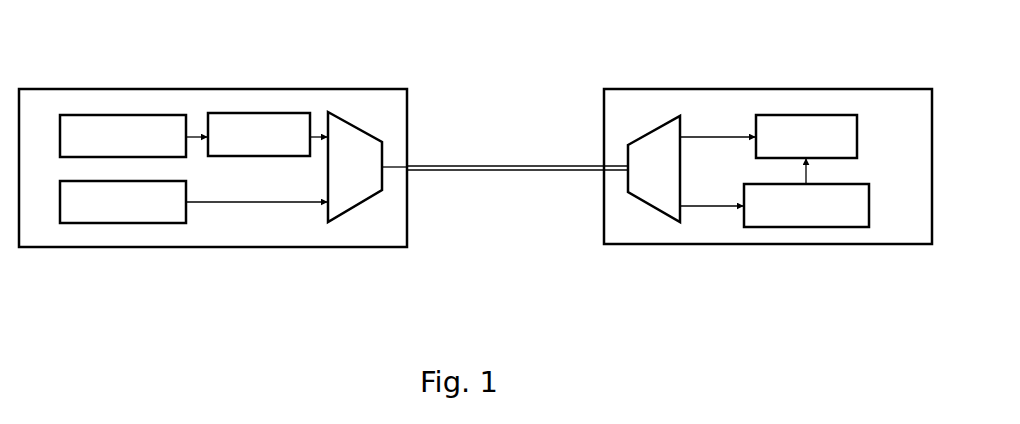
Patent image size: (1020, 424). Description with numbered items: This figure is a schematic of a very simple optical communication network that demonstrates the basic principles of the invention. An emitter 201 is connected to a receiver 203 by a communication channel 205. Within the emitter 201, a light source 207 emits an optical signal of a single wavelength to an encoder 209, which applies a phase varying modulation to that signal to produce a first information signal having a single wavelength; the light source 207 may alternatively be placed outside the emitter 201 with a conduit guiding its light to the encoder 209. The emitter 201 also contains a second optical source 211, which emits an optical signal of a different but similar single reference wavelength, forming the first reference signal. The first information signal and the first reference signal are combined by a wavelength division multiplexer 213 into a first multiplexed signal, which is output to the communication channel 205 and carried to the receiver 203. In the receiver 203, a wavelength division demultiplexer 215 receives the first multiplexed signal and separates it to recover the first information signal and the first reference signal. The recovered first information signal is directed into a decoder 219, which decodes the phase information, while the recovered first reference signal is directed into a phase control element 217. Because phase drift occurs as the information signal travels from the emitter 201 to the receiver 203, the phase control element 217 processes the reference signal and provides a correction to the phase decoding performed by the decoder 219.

The emitter 201 is at (85, 87).
The receiver 203 is at (731, 87).
The communication channel 205 is at (512, 164).
The light source 207 is at (141, 113).
The encoder 209 is at (259, 111).
The second optical source 211 is at (138, 226).
The wavelength division multiplexer 213 is at (358, 126).
The wavelength division demultiplexer 215 is at (645, 209).
The phase control element 217 is at (785, 231).
The decoder 219 is at (807, 113).